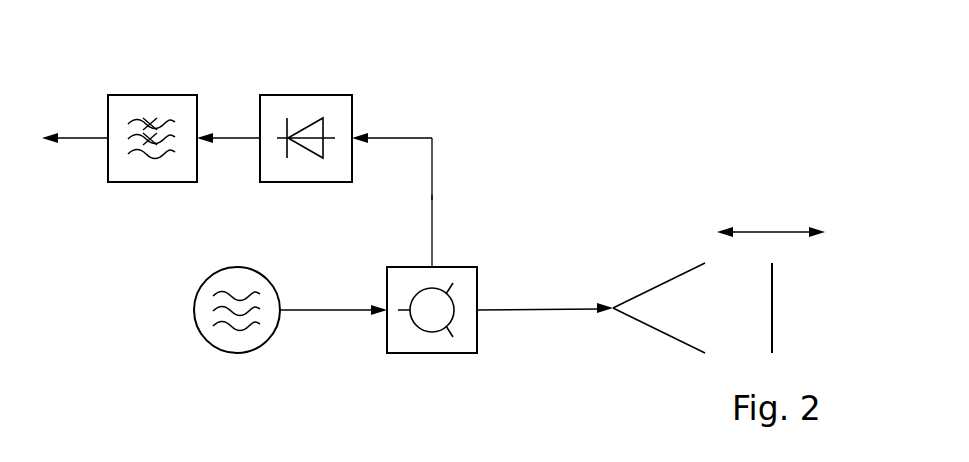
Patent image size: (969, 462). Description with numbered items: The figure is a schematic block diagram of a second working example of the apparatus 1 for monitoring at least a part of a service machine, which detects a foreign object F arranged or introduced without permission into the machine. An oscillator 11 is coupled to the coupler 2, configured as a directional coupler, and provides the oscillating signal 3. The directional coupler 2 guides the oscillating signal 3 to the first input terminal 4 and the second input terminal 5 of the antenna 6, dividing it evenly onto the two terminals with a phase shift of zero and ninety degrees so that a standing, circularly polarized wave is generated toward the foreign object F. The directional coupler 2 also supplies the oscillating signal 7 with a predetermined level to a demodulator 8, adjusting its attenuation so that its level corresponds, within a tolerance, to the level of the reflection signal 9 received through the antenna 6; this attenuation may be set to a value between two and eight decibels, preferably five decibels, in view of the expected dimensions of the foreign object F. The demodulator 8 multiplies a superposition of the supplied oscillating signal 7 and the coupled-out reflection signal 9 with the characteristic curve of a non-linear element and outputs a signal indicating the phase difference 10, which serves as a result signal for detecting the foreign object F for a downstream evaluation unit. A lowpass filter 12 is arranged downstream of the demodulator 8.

The apparatus 1 is at (636, 74).
The coupler 2 is at (458, 267).
The oscillating signal 3 is at (323, 312).
The first input terminal 4 is at (613, 305).
The second input terminal 5 is at (613, 312).
The antenna 6 is at (653, 293).
The oscillating signal with predetermined level 7 is at (432, 166).
The demodulator 8 is at (309, 95).
The reflection signal 9 is at (432, 216).
The signal indicating the phase difference 10 is at (235, 137).
The oscillator 11 is at (233, 268).
The lowpass filter 12 is at (157, 95).
The foreign object F is at (772, 305).